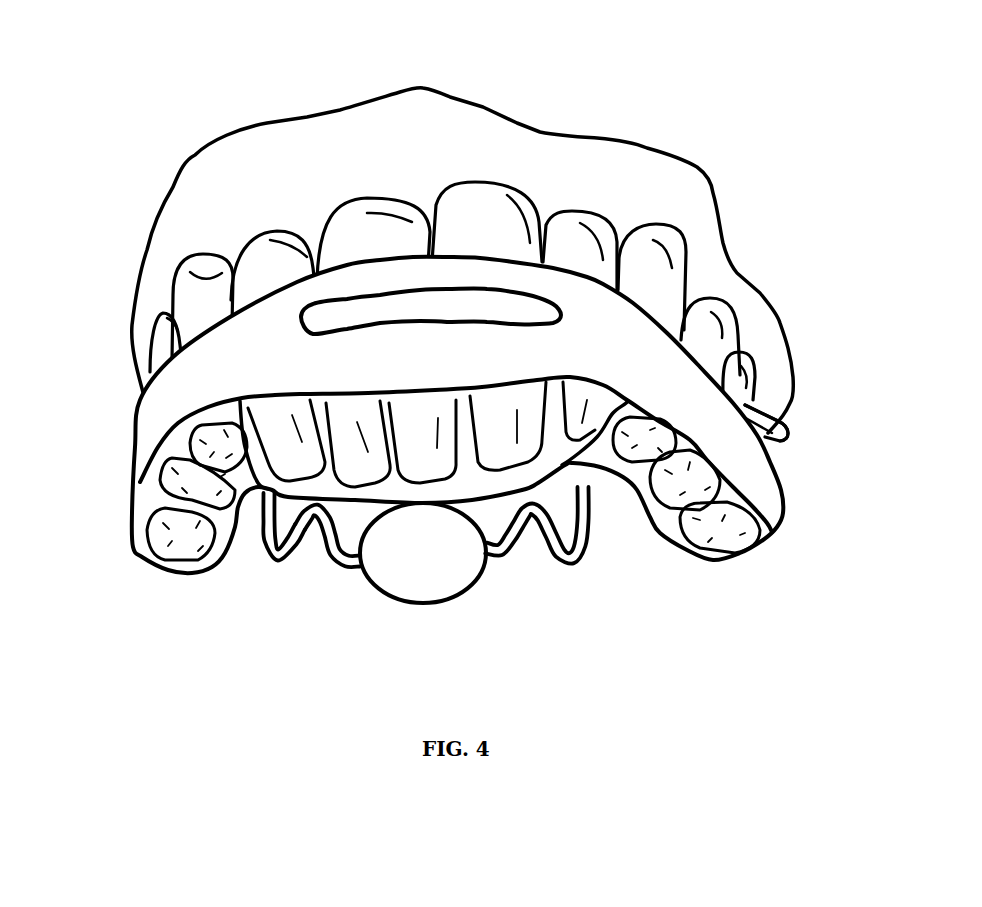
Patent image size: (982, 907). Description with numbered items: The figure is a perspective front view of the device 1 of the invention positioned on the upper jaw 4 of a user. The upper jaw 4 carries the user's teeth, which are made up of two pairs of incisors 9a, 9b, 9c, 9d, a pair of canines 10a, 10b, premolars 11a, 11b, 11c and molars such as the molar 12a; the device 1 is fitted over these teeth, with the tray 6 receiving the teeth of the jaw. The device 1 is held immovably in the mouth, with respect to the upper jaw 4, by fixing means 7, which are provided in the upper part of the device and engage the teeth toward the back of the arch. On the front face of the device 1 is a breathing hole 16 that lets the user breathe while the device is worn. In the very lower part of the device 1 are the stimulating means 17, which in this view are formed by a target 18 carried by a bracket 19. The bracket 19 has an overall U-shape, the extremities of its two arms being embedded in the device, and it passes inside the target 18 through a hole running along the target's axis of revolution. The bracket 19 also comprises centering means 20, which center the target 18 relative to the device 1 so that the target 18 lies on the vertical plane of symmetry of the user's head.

The device 1 is at (785, 518).
The upper jaw 4 is at (328, 148).
The tray 6 is at (153, 497).
The fixing means 7 is at (789, 423).
The incisor 9a is at (484, 200).
The incisor 9b is at (380, 225).
The incisor 9c is at (573, 225).
The incisor 9d is at (252, 250).
The canine 10a is at (668, 255).
The canine 10b is at (199, 275).
The premolar 11a is at (710, 327).
The premolar 11b is at (162, 340).
The premolar 11c is at (750, 385).
The molar 12a is at (757, 427).
The breathing hole 16 is at (333, 322).
The stimulating means 17 is at (495, 578).
The target 18 is at (430, 547).
The bracket 19 is at (266, 545).
The centering means 20 is at (306, 557).